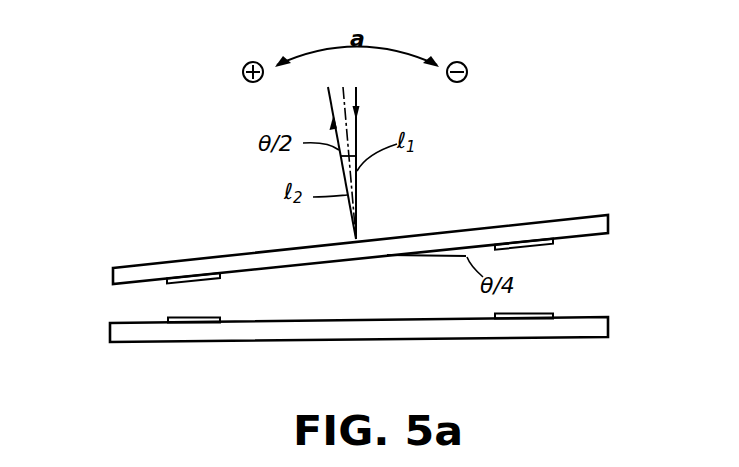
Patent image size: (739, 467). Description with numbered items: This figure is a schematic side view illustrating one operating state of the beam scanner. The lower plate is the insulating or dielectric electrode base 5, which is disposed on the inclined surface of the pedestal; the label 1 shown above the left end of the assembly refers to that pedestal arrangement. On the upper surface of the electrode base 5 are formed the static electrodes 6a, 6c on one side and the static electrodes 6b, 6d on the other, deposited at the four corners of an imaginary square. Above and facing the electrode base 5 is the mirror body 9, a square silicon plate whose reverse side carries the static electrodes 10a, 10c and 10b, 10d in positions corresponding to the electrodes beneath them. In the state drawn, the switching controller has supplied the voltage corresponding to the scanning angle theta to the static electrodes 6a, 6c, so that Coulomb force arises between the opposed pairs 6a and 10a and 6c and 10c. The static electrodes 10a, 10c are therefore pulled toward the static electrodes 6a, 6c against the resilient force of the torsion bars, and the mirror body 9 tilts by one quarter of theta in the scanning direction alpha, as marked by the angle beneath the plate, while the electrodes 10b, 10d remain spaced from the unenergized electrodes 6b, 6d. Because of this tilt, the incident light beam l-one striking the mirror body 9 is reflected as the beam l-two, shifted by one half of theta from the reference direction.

The liquid crystal display cell 1 is at (104, 227).
The electrode base 5 is at (374, 320).
The mirror body 9 is at (434, 233).
The static electrode 10a is at (112, 288).
The static electrode 10c is at (170, 284).
The static electrode 10b is at (592, 260).
The static electrode 10d is at (537, 246).
The static electrode 6a is at (115, 319).
The static electrode 6c is at (170, 318).
The static electrode 6b is at (591, 300).
The static electrode 6d is at (531, 313).